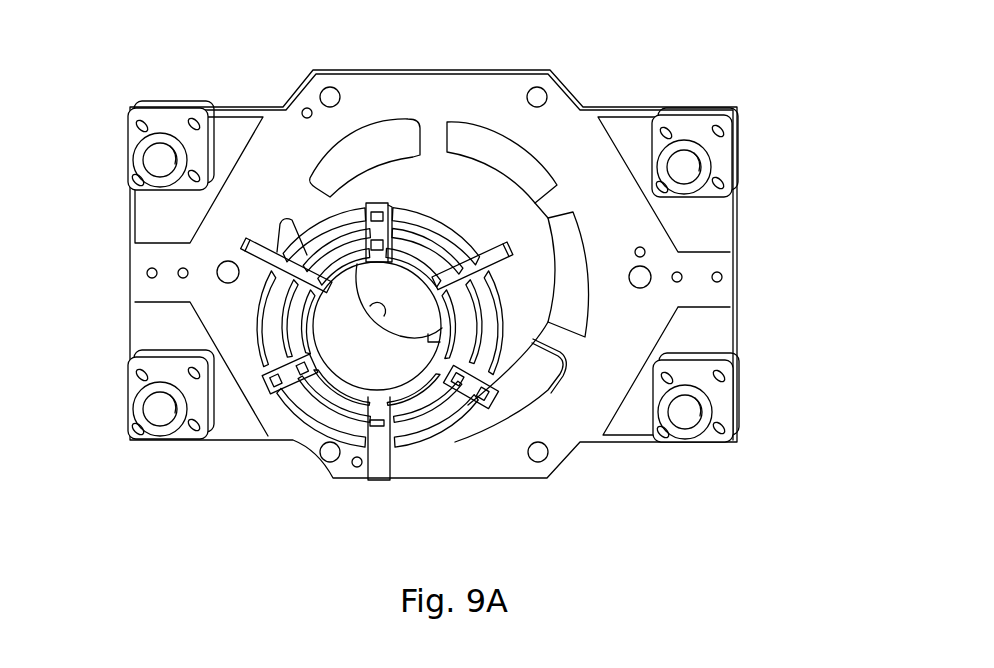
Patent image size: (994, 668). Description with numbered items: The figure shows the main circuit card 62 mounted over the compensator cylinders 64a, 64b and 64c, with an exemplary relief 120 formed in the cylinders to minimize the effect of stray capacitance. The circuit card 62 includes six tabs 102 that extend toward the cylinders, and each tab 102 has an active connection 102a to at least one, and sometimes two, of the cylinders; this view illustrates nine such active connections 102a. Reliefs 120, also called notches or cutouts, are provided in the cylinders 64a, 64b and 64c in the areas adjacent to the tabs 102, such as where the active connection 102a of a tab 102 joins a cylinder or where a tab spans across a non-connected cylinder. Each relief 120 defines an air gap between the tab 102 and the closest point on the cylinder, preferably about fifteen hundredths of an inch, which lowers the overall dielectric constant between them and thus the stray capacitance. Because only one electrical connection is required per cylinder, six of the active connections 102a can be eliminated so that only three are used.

The main circuit card 62 is at (500, 70).
The compensator cylinder 64a is at (435, 437).
The compensator cylinder 64b is at (447, 402).
The compensator cylinder 64c is at (327, 391).
The circuit card tab 102 is at (382, 480).
The active connection 102a is at (369, 423).
The relief 120 is at (362, 441).